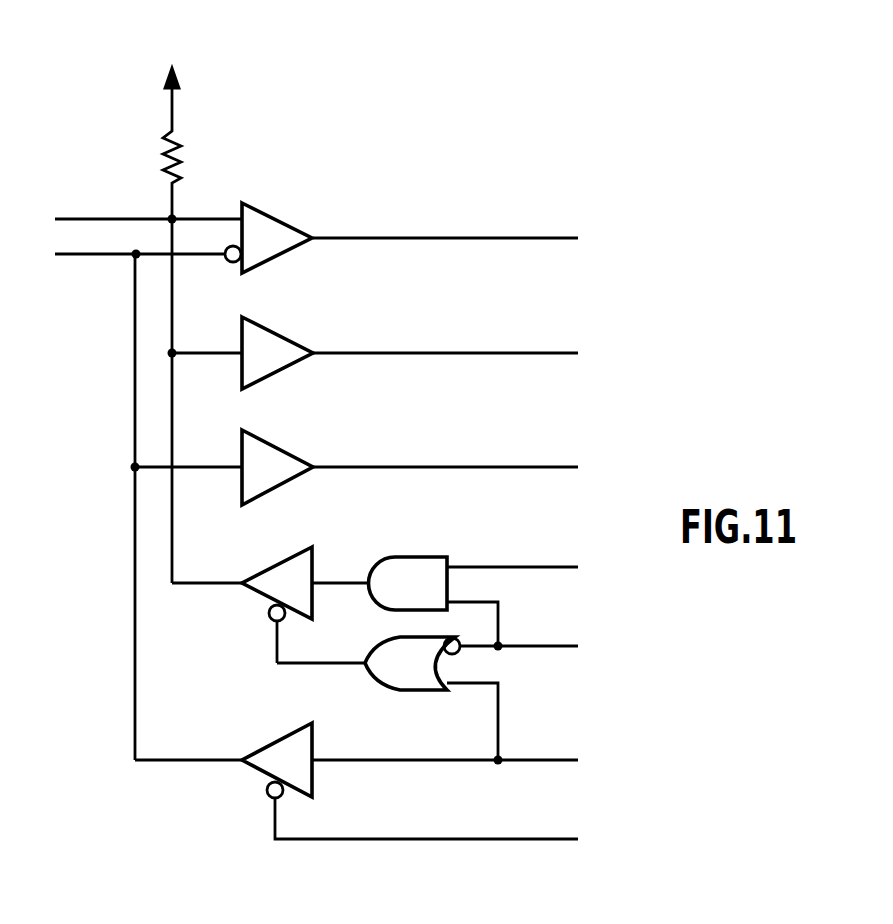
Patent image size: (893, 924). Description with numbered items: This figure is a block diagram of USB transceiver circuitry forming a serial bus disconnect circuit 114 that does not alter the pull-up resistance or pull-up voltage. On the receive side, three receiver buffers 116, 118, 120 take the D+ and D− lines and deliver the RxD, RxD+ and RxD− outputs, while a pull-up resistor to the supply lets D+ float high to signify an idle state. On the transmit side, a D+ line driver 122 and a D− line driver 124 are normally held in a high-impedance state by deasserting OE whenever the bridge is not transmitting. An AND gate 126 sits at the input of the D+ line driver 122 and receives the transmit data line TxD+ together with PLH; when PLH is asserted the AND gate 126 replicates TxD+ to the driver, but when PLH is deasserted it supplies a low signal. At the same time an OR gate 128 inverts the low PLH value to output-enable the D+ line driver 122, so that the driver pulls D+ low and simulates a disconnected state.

The circuit 114 is at (465, 195).
The differential receiver buffer 116 is at (282, 205).
The single-ended receiver buffer (RxD+) 118 is at (281, 319).
The single-ended receiver buffer (RxD-) 120 is at (281, 433).
The D+ line driver 122 is at (275, 549).
The line driver 124 is at (275, 724).
The AND gate 126 is at (397, 556).
The OR gate 128 is at (397, 692).